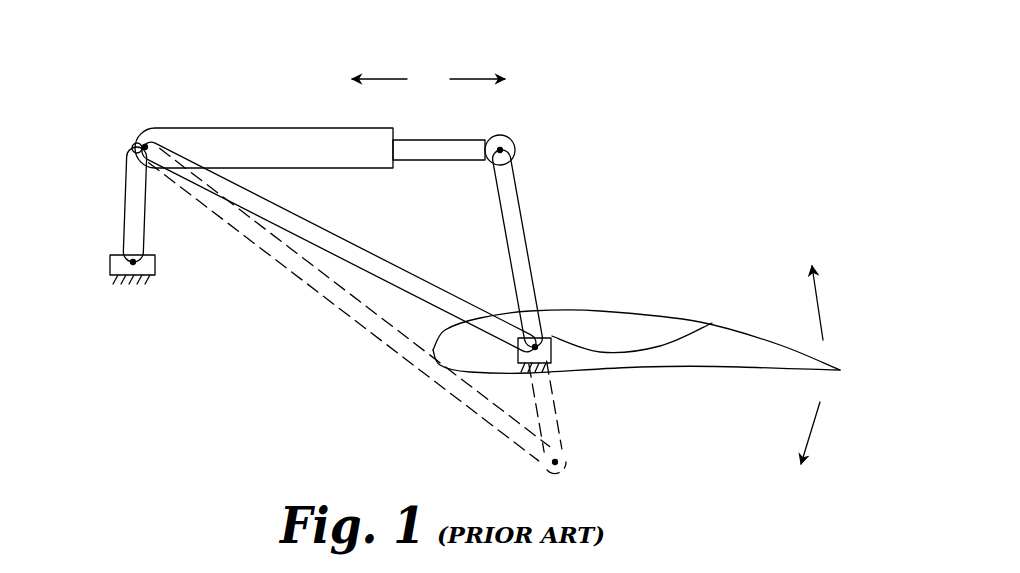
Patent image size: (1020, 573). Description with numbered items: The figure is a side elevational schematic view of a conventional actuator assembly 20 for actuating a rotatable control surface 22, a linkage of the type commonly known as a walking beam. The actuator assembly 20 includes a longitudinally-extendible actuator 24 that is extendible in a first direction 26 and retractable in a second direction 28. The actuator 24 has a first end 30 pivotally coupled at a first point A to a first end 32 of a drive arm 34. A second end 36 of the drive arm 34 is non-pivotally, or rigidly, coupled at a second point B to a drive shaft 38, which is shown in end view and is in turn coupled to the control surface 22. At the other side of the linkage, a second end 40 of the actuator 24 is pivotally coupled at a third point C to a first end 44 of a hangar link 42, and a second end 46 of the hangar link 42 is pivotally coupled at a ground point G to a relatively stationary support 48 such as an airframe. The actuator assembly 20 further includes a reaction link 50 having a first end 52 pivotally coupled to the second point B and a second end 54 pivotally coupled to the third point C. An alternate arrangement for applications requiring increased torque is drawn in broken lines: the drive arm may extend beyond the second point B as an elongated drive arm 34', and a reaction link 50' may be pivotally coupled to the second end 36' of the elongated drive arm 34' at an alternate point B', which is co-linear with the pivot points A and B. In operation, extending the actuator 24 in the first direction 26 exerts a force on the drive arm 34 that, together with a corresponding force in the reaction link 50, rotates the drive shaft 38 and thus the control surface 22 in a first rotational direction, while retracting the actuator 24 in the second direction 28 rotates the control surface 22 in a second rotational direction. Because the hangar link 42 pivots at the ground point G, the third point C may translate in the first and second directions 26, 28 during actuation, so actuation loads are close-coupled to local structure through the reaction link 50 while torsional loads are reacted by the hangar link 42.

The actuator assembly 20 is at (646, 56).
The control surface 22 is at (660, 372).
The longitudinally-extendible actuator 24 is at (214, 128).
The first direction 26 is at (478, 78).
The second direction 28 is at (384, 78).
The first end of the actuator 30 is at (456, 160).
The first end of the drive arm 32 is at (498, 190).
The drive arm 34 is at (546, 248).
The second end of the drive arm 36 is at (556, 314).
The drive shaft 38 is at (640, 333).
The second end of the actuator 40 is at (149, 129).
The hangar link 42 is at (124, 228).
The first end of the hangar link 44 is at (128, 186).
The second end of the hangar link 46 is at (124, 252).
The stationary support 48 is at (145, 284).
The reaction link 50 is at (339, 247).
The first rotational direction 52 is at (504, 326).
The second rotational direction 54 is at (197, 160).
The first point A is at (507, 150).
The second point B is at (587, 311).
The third point C is at (136, 146).
The ground point G is at (118, 262).
The elongated drive arm 34' is at (580, 406).
The second end of the elongated drive arm 36' is at (596, 440).
The alternate reaction link 50' is at (349, 304).
The alternate point B' is at (599, 478).